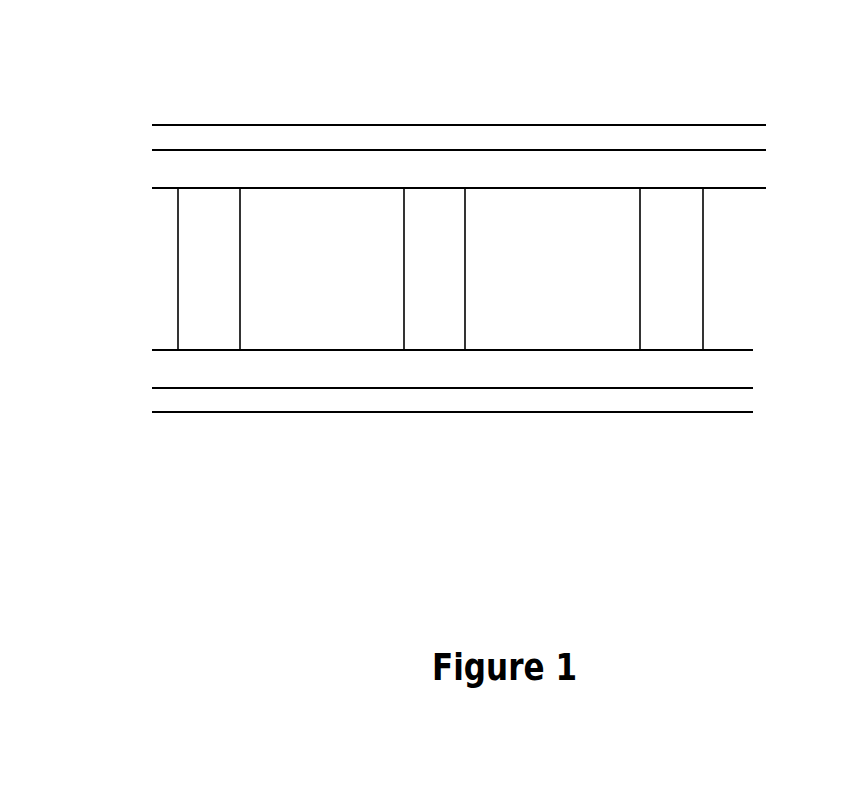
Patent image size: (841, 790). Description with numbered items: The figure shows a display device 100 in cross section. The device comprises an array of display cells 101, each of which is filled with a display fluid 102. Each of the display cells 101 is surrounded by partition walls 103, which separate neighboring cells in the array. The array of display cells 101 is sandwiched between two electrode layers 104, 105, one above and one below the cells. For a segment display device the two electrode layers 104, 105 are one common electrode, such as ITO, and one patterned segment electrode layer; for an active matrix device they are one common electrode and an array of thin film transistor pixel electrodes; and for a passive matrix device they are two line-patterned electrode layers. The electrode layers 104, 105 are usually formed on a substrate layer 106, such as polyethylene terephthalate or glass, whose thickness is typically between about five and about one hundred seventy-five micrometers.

The display device 100 is at (453, 274).
The display cells 101 is at (278, 263).
The display fluid 102 is at (290, 303).
The partition walls 103 is at (441, 303).
The electrode layer 104 is at (628, 172).
The electrode layer 105 is at (565, 365).
The substrate layer 106 is at (553, 137).